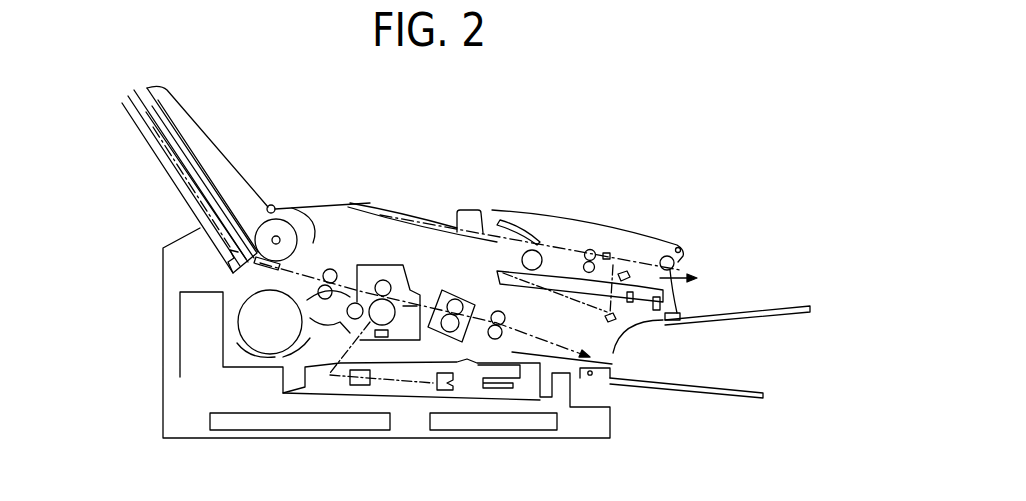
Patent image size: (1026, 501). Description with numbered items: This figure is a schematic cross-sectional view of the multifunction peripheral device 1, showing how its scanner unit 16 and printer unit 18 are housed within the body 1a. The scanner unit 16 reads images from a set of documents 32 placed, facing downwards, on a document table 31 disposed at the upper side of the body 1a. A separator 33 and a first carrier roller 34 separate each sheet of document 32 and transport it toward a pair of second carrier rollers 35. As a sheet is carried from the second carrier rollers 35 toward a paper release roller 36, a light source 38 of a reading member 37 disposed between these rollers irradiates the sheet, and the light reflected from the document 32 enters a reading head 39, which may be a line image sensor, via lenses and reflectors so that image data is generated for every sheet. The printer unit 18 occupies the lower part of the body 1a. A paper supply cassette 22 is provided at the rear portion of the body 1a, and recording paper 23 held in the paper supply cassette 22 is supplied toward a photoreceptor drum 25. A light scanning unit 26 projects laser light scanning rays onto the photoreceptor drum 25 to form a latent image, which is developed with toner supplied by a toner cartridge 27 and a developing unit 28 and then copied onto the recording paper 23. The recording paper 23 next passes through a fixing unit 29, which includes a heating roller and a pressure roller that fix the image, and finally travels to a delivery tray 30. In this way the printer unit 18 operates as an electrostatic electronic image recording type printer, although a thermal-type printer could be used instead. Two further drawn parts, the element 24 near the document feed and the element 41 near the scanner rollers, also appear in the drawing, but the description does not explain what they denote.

The facsimile apparatus 1 is at (282, 142).
The housing upper portion 1a is at (350, 205).
The upper cover 16 is at (576, 236).
The document insertion opening 18 is at (326, 228).
The document tray 22 is at (172, 181).
The documents 23 is at (183, 148).
The document feed roller 24 is at (277, 235).
The developing unit 25 is at (390, 310).
The main chassis 26 is at (423, 397).
The photosensitive drum 27 is at (252, 317).
The transfer roller 28 is at (351, 300).
The fixing unit 29 is at (452, 298).
The recording paper tray 30 is at (689, 386).
The document guide plate 31 is at (402, 222).
The image sensor 32 is at (462, 230).
The document guide 33 is at (513, 227).
The document feed roller 34 is at (533, 270).
The document discharge rollers 35 is at (598, 250).
The operating knob 36 is at (676, 266).
The sensor actuator 37 is at (633, 268).
The guide plate 38 is at (633, 272).
The document discharge tray 39 is at (693, 318).
The document sensor 41 is at (610, 252).